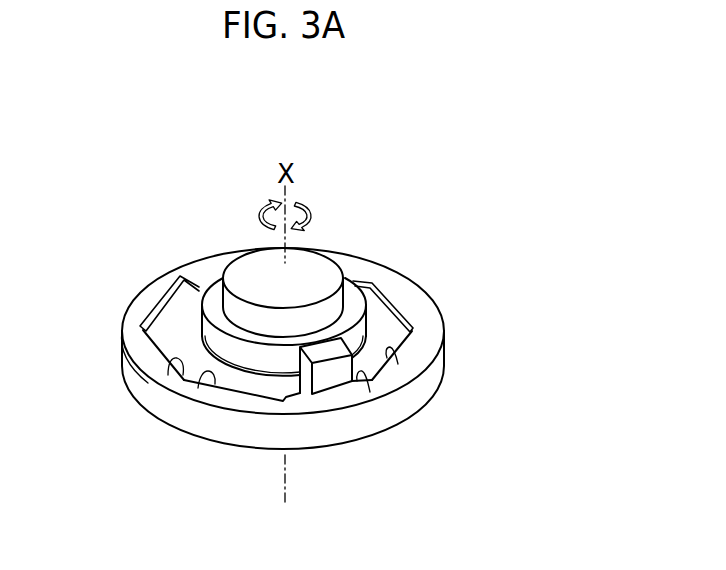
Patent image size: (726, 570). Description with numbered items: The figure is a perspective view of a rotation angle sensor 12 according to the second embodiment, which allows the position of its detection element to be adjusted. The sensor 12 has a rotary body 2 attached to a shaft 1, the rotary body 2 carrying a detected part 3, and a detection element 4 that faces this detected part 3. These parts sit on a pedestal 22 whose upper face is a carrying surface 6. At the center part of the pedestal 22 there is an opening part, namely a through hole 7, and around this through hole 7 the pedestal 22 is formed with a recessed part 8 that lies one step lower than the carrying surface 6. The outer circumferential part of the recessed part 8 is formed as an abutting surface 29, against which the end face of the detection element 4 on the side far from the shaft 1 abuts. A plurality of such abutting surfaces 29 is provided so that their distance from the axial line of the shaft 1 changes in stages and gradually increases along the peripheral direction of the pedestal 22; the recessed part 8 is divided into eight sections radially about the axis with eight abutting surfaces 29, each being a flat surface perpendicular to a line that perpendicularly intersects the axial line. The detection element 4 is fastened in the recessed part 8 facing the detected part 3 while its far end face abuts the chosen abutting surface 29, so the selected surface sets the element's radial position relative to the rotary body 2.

The rotation angle sensor 12 is at (509, 184).
The shaft 1 is at (322, 282).
The rotary body 2 is at (160, 308).
The detected part 3 is at (205, 327).
The detection element 4 is at (327, 373).
The carrying surface 6 is at (415, 307).
The through hole 7 is at (365, 343).
The recessed part 8 is at (190, 358).
The pedestal 22 is at (133, 380).
The abutting surface 29 is at (198, 388).